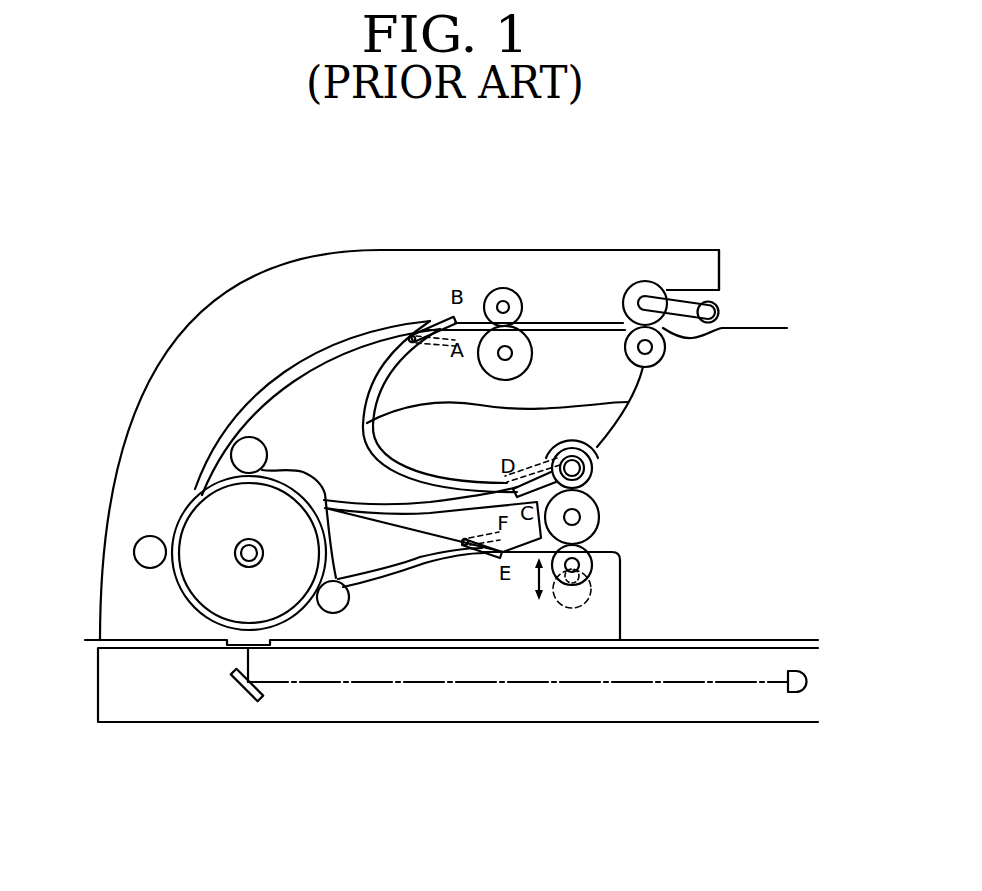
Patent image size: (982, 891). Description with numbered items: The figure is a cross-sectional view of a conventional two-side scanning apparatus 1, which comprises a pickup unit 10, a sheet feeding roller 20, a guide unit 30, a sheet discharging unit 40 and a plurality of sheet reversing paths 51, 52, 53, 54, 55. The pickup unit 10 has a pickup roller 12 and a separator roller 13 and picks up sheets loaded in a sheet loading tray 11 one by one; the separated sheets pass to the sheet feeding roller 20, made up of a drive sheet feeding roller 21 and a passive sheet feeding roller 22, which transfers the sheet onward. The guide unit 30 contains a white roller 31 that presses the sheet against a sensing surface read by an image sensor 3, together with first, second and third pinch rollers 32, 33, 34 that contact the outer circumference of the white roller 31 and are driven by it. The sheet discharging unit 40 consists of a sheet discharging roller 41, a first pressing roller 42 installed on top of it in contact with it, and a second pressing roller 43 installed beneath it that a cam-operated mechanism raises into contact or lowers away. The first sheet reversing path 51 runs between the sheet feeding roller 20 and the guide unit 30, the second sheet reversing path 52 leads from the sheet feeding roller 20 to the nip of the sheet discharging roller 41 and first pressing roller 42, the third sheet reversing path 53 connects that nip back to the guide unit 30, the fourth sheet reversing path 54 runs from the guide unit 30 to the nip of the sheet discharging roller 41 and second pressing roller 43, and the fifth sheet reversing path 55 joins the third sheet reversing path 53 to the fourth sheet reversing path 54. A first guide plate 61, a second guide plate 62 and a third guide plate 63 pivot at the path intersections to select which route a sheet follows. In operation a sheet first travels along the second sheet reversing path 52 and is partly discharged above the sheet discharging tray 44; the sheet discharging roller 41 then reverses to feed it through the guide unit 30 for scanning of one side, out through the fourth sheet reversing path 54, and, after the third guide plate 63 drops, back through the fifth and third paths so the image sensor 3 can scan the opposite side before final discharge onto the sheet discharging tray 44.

The two-side scanning apparatus 1 is at (455, 415).
The image sensor 3 is at (788, 709).
The pickup unit 10 is at (694, 281).
The sheet loading tray 11 is at (787, 328).
The pickup roller 12 is at (718, 306).
The separator roller 13 is at (645, 290).
The sheet feeding roller 20 is at (506, 290).
The drive sheet feeding roller 21 is at (526, 340).
The passive sheet feeding roller 22 is at (503, 288).
The guide unit 30 is at (201, 598).
The white roller 31 is at (185, 575).
The first pinch roller 32 is at (231, 453).
The second pinch roller 33 is at (150, 551).
The third pinch roller 34 is at (333, 613).
The sheet discharging unit 40 is at (580, 544).
The sheet discharging roller 41 is at (599, 515).
The first pressing roller 42 is at (593, 472).
The second pressing roller 43 is at (593, 570).
The sheet discharging tray 44 is at (750, 638).
The first sheet reversing path 51 is at (222, 427).
The second sheet reversing path 52 is at (612, 406).
The third sheet reversing path 53 is at (183, 508).
The fourth sheet reversing path 54 is at (403, 565).
The fifth sheet reversing path 55 is at (440, 554).
The first guide plate 61 is at (428, 328).
The second guide plate 62 is at (594, 444).
The third guide plate 63 is at (481, 553).